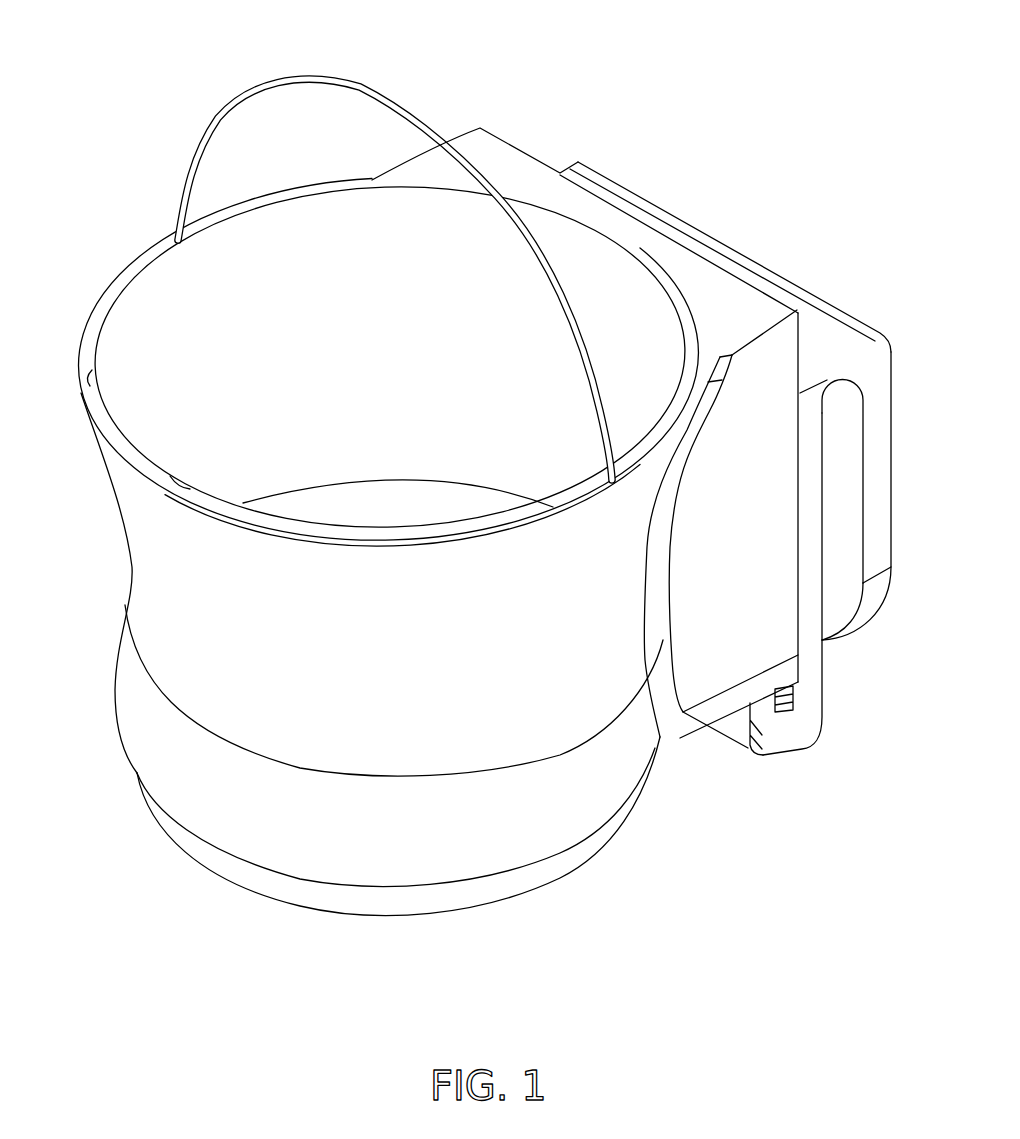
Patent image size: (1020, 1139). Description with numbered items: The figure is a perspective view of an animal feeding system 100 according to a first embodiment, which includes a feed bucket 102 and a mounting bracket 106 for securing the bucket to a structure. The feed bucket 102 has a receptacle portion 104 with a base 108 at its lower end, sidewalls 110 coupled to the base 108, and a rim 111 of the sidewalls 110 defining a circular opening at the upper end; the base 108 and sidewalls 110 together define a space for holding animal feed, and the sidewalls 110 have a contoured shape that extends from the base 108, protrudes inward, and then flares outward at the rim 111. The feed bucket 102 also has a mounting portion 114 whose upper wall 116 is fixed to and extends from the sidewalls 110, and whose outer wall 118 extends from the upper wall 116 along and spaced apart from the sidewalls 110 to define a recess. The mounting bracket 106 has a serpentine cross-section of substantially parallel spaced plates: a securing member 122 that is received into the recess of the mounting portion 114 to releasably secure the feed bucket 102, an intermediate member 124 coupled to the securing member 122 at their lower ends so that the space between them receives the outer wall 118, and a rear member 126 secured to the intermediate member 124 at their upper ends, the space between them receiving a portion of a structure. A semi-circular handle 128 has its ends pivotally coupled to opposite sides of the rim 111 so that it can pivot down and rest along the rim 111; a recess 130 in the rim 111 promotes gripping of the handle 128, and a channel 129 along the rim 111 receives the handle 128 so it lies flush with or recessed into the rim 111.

The animal feeding system 100 is at (206, 42).
The feed bucket 102 is at (98, 300).
The receptacle portion 104 is at (133, 567).
The mounting bracket 106 is at (898, 398).
The base 108 is at (547, 880).
The sidewalls 110 is at (212, 607).
The rim 111 is at (150, 252).
The mounting portion 114 is at (745, 278).
The upper wall 116 is at (495, 150).
The outer wall 118 is at (800, 605).
The securing member 122 is at (762, 713).
The intermediate member 124 is at (813, 680).
The rear member 126 is at (883, 522).
The handle 128 is at (362, 76).
The channel 129 is at (92, 370).
The recess 130 is at (172, 478).